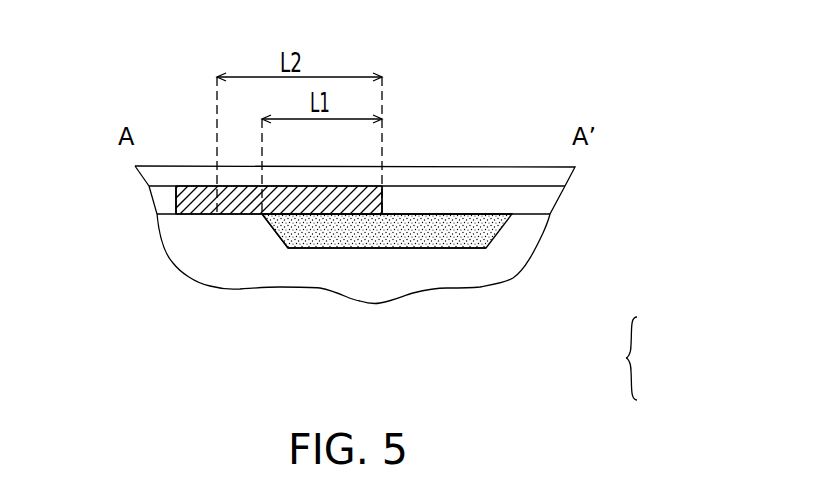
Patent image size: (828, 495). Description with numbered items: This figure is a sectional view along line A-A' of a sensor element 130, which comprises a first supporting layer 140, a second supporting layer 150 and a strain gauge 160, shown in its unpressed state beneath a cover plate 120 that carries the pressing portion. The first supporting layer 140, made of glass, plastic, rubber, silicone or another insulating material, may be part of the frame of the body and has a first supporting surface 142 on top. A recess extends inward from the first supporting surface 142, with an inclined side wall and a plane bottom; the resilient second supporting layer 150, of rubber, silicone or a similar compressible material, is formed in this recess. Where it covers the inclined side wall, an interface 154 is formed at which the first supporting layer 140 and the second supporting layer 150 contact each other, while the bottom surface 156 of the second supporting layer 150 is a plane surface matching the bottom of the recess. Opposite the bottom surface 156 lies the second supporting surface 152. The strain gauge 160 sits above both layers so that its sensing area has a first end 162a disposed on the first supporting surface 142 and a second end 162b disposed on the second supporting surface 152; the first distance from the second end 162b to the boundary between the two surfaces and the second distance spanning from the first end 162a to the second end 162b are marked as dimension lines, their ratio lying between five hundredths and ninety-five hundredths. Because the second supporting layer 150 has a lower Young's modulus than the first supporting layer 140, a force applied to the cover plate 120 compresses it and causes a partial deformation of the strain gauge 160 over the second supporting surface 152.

The cover plate 120 is at (563, 178).
The sensor element 130 is at (630, 357).
The first supporting layer 140 is at (180, 248).
The first supporting surface 142 is at (166, 212).
The second supporting layer 150 is at (480, 229).
The second supporting surface 152 is at (444, 209).
The interface 154 is at (280, 229).
The bottom surface 156 is at (443, 250).
The strain gauge 160 is at (197, 187).
The first end 162a is at (217, 214).
The second end 162b is at (383, 214).